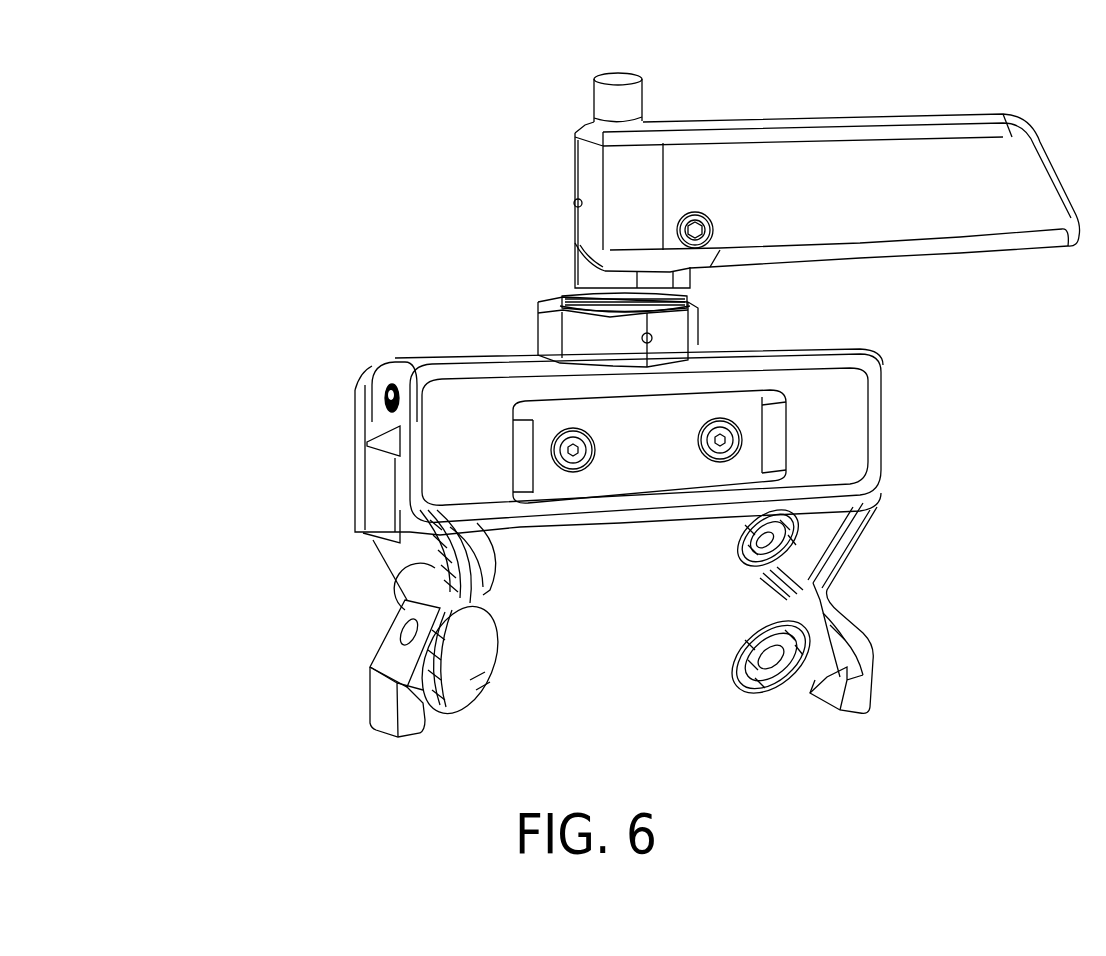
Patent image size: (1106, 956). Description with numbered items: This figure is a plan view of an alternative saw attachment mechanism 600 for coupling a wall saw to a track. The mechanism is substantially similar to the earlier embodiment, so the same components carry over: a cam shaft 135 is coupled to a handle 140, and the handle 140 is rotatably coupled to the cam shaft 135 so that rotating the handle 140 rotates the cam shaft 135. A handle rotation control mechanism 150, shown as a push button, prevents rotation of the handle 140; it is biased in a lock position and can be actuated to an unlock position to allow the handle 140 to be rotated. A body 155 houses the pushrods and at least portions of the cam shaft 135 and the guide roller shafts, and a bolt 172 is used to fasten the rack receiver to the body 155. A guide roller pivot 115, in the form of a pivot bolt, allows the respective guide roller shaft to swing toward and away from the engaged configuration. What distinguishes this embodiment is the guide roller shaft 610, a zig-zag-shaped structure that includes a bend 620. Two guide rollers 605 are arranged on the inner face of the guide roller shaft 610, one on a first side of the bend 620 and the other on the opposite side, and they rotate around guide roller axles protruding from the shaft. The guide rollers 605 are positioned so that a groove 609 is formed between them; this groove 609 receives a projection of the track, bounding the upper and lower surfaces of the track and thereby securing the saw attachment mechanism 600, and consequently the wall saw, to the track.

The saw attachment mechanism 600 is at (284, 108).
The handle rotation control mechanism 150 is at (642, 80).
The handle 140 is at (577, 170).
The cam shaft 135 is at (567, 296).
The body 155 is at (533, 357).
The guide roller pivot 115 is at (383, 405).
The bolt 172 is at (703, 460).
The guide roller shaft 610 is at (363, 533).
The guide roller 605 is at (383, 583).
The groove 609 is at (483, 602).
The bend 620 is at (823, 618).